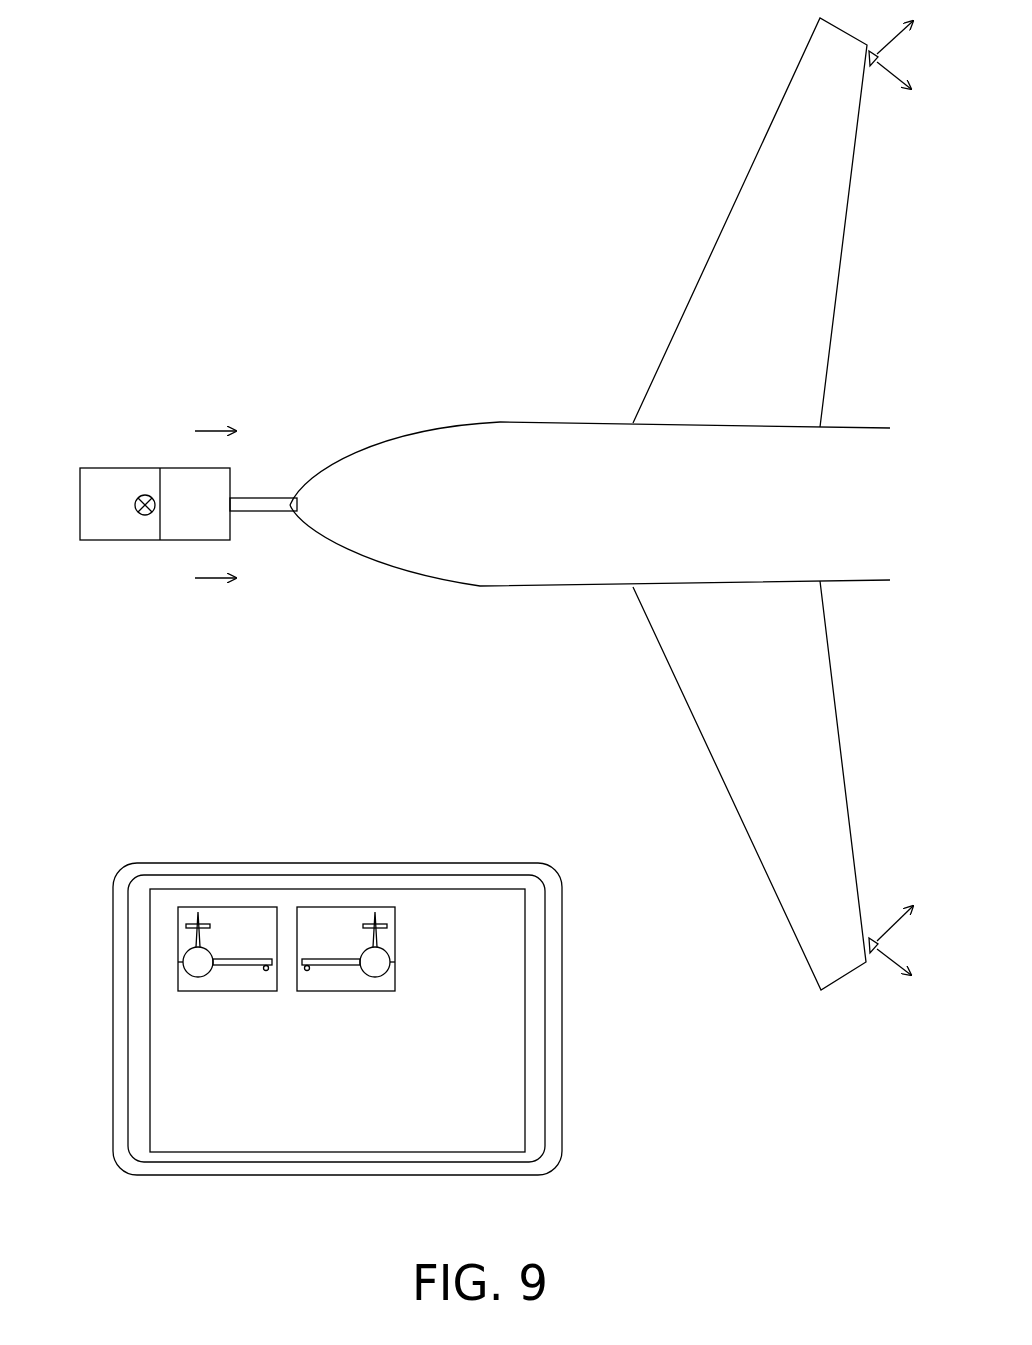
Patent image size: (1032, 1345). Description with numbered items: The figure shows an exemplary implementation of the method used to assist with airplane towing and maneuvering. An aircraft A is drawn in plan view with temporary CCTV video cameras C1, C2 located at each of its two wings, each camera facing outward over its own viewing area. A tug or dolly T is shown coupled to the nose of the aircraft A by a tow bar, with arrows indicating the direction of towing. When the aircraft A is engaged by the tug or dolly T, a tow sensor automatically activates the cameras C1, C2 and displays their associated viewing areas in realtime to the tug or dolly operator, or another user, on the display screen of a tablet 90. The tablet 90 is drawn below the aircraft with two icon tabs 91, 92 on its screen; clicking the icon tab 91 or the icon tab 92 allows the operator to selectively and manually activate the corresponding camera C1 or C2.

The aircraft A is at (443, 398).
The tug or dolly T is at (127, 445).
The CCTV video camera C1 is at (896, 62).
The CCTV video camera C2 is at (896, 947).
The tablet 90 is at (110, 952).
The icon tab 91 is at (276, 991).
The icon tab 92 is at (393, 948).